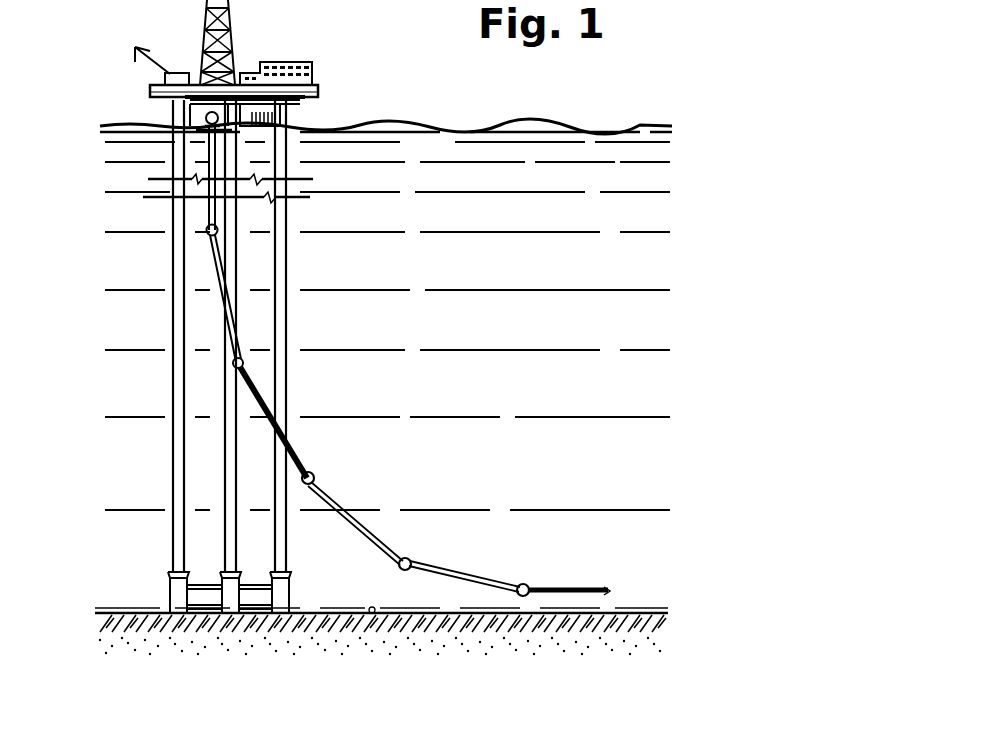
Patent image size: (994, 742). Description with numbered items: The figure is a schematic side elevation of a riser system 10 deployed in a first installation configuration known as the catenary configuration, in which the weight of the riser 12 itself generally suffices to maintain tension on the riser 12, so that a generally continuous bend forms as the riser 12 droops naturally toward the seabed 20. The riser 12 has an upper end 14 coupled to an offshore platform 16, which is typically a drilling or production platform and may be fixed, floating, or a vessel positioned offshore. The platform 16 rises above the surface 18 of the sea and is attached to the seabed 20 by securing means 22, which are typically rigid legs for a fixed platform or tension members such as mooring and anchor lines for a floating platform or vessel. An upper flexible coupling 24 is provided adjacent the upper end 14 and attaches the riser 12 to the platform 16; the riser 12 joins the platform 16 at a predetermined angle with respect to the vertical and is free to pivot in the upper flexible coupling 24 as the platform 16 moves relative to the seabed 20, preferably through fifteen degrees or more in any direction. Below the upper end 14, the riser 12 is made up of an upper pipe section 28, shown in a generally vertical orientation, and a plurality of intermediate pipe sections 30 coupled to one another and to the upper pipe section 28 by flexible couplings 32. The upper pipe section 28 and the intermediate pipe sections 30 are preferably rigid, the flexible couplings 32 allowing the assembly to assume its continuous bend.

The riser system 10 is at (430, 468).
The riser 12 is at (290, 444).
The upper end 14 is at (182, 138).
The offshore platform 16 is at (318, 82).
The surface of the sea 18 is at (505, 125).
The seabed 20 is at (368, 613).
The securing means 22 is at (223, 522).
The upper flexible coupling 24 is at (192, 130).
The upper pipe section 28 is at (215, 163).
The intermediate pipe sections 30 is at (370, 533).
The flexible couplings 32 is at (413, 566).